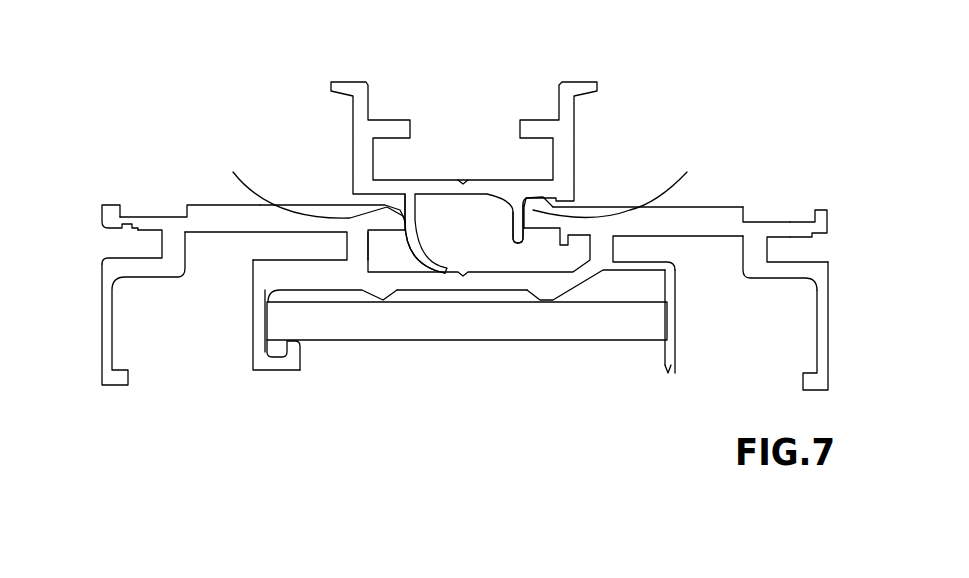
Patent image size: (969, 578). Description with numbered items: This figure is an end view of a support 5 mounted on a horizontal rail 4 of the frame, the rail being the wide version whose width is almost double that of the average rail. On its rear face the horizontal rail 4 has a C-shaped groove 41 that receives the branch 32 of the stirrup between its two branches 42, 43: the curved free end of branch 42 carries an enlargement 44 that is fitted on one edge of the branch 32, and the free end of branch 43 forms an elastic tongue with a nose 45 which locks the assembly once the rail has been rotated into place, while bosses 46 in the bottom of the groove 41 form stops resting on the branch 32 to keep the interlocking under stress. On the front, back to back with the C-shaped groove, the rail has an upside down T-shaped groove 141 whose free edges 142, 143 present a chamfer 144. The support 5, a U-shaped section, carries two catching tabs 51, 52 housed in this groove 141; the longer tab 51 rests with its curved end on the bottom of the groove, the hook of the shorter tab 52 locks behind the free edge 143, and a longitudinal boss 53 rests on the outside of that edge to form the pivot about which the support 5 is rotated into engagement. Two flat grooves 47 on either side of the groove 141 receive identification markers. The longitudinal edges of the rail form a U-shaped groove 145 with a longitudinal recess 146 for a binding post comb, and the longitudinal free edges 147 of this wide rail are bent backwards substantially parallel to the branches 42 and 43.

The horizontal rail 4 is at (738, 143).
The support 5 is at (588, 73).
The branch of the stirrup 32 is at (462, 330).
The C-shaped groove 41 is at (508, 358).
The branch of the C-shaped groove 42 is at (263, 333).
The branch of the C-shaped groove 43 is at (675, 325).
The enlargement 44 is at (293, 352).
The nose 45 is at (667, 350).
The bosses 46 is at (383, 297).
The flat grooves 47 is at (147, 215).
The catching tab 51 is at (420, 200).
The catching tab 52 is at (505, 206).
The longitudinal boss 53 is at (575, 201).
The upside down T-shaped groove 141 is at (480, 260).
The free edge of the T-shaped groove 142 is at (383, 224).
The free edge of the T-shaped groove 143 is at (540, 224).
The chamfer 144 is at (459, 185).
The U-shaped groove 145 is at (134, 243).
The longitudinal recess 146 is at (126, 224).
The longitudinal free edges 147 is at (113, 305).